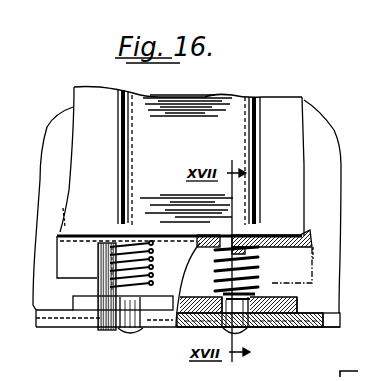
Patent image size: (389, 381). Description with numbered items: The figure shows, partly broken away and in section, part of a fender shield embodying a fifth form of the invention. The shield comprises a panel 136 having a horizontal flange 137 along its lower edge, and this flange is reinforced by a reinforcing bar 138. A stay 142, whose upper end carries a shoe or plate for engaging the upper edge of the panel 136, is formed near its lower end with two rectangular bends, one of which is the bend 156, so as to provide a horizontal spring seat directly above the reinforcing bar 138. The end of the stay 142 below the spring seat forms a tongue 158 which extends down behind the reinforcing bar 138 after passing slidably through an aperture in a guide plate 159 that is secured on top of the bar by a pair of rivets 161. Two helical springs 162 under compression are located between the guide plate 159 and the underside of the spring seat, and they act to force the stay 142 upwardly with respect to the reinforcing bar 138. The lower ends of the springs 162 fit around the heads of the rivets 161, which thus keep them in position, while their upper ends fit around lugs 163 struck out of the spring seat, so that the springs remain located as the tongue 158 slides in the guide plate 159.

The panel 136 is at (332, 150).
The horizontal flange 137 is at (328, 332).
The reinforcing bar 138 is at (338, 310).
The stay 142 is at (287, 113).
The rectangular bend 156 is at (302, 237).
The tongue 158 is at (117, 322).
The guide plate 159 is at (83, 305).
The rivet 161 is at (245, 328).
The helical spring 162 is at (247, 270).
The lug 163 is at (245, 253).